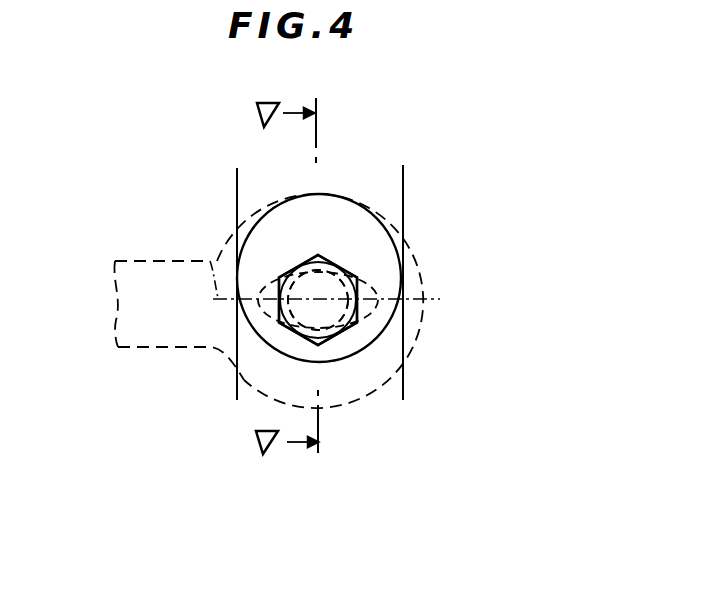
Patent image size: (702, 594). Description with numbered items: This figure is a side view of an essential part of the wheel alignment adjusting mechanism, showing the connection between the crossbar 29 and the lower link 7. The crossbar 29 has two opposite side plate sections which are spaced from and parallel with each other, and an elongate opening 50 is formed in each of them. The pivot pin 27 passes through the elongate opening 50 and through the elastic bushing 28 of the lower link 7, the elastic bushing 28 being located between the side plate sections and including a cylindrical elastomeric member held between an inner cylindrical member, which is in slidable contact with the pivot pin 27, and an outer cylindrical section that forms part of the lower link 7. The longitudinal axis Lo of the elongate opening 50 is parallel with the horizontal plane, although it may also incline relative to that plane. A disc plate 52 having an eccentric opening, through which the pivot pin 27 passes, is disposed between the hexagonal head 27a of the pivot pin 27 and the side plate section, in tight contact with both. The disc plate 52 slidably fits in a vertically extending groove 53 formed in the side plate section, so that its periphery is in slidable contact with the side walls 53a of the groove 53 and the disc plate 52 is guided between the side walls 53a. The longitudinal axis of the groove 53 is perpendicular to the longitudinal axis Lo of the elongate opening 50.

The lower link 7 is at (143, 350).
The pivot pin 27 is at (352, 325).
The hexagonal head 27a is at (320, 256).
The elastic bushing 28 is at (405, 298).
The crossbar 29 is at (450, 209).
The elongate opening 50 is at (263, 312).
The disc plate 52 is at (384, 333).
The groove 53 is at (273, 180).
The side walls 53a is at (239, 183).
The longitudinal axis Lo is at (212, 260).